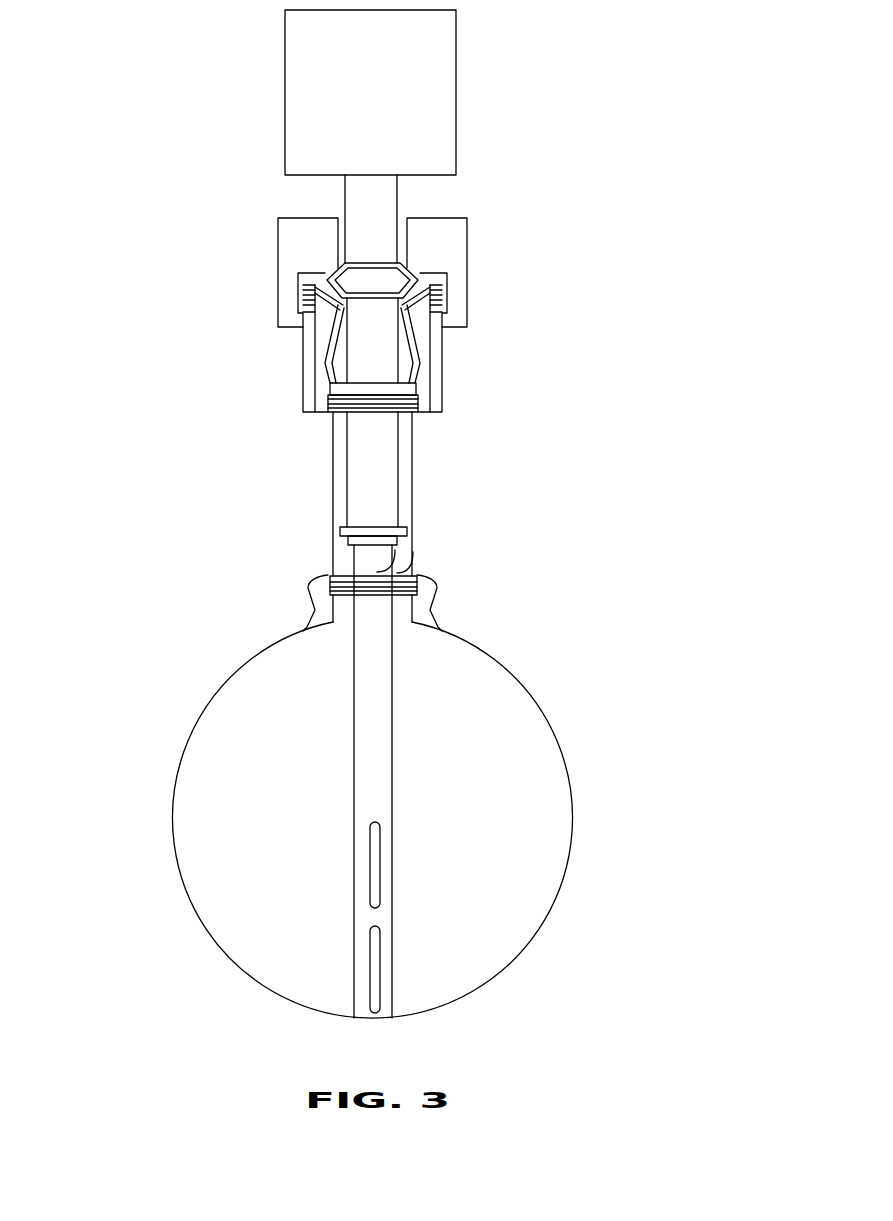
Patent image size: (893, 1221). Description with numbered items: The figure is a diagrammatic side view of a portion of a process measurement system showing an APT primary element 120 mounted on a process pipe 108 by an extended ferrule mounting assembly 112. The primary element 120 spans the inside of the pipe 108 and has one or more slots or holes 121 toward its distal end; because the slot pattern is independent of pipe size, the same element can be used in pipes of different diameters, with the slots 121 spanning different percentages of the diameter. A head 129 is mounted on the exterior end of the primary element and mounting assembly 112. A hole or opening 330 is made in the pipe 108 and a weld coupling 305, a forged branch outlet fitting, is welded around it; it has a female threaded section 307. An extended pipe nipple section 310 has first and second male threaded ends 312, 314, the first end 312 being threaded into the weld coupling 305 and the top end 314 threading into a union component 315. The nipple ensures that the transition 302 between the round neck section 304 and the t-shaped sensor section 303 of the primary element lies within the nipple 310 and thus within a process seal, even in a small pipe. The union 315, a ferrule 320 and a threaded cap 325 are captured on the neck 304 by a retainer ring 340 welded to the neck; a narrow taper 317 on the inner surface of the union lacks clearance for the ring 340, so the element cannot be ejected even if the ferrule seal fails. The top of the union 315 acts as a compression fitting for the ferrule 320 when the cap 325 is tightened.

The process pipe 108 is at (173, 808).
The extended ferrule mounting assembly 112 is at (160, 483).
The APT primary element 120 is at (395, 812).
The slots or holes 121 is at (376, 935).
The head 129 is at (430, 100).
The transition 302 is at (342, 562).
The t-shaped sensor section 303 is at (405, 545).
The round neck section 304 is at (378, 505).
The weld coupling 305 is at (440, 588).
The female threaded section 307 is at (310, 590).
The extended pipe nipple section 310 is at (420, 432).
The first male threaded end 312 is at (405, 570).
The second male threaded end 314 is at (392, 398).
The union component 315 is at (310, 372).
The narrow taper 317 is at (327, 314).
The ferrule 320 is at (420, 280).
The threaded cap 325 is at (297, 240).
The opening 330 is at (336, 652).
The retainer ring 340 is at (342, 530).